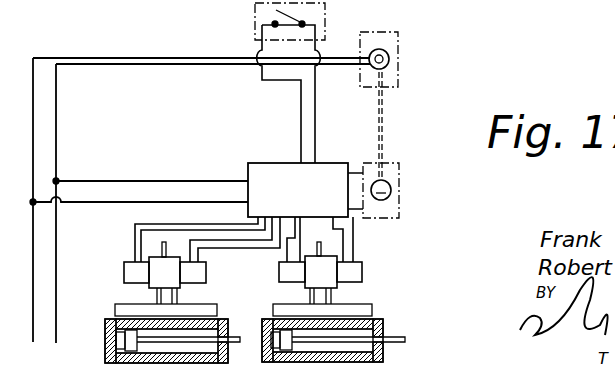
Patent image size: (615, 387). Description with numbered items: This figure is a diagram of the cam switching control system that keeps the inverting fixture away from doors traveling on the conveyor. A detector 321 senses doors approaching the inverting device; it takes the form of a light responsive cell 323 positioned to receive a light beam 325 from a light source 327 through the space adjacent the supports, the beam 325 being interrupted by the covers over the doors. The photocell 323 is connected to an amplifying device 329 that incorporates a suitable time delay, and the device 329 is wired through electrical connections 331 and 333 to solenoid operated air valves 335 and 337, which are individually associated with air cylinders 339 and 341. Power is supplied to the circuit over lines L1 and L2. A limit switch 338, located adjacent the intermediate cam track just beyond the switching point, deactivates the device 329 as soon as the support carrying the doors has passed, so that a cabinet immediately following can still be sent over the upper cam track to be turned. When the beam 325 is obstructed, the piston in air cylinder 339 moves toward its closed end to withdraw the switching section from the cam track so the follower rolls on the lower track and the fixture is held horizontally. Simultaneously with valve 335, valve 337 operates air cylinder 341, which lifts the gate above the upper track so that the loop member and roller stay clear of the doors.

The detector 321 is at (258, 163).
The light responsive cell 323 is at (390, 196).
The light beam 325 is at (385, 100).
The light source 327 is at (387, 50).
The amplifying device 329 is at (330, 168).
The electrical connection 331 is at (352, 247).
The electrical connection 333 is at (133, 240).
The solenoid operated air valve 335 is at (330, 284).
The solenoid operated air valve 337 is at (148, 287).
The limit switch 338 is at (276, 10).
The air cylinder 339 is at (383, 322).
The air cylinder 341 is at (110, 350).
The power line L1 is at (191, 203).
The power line L2 is at (211, 205).